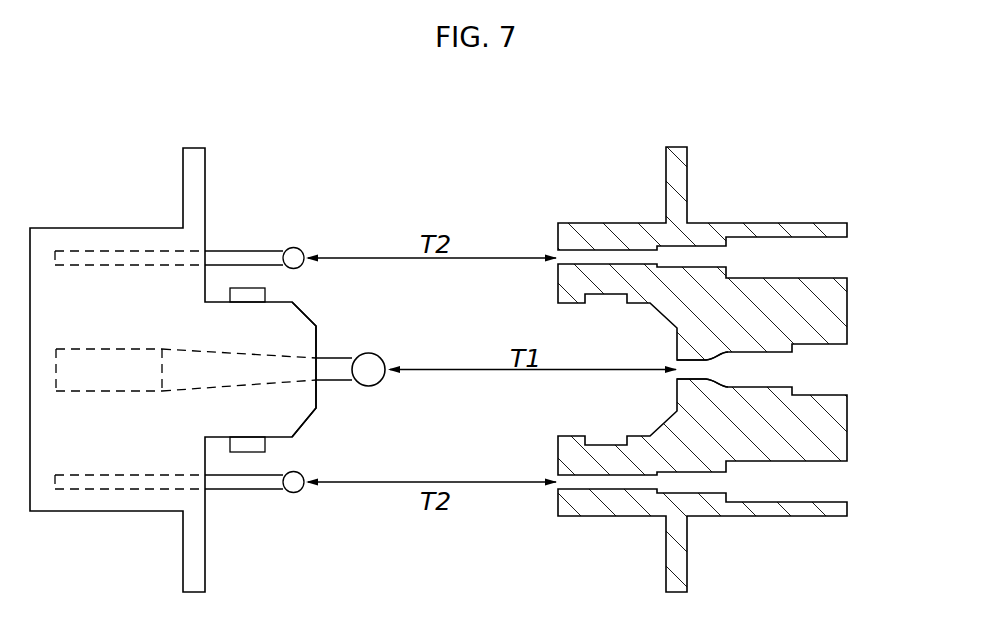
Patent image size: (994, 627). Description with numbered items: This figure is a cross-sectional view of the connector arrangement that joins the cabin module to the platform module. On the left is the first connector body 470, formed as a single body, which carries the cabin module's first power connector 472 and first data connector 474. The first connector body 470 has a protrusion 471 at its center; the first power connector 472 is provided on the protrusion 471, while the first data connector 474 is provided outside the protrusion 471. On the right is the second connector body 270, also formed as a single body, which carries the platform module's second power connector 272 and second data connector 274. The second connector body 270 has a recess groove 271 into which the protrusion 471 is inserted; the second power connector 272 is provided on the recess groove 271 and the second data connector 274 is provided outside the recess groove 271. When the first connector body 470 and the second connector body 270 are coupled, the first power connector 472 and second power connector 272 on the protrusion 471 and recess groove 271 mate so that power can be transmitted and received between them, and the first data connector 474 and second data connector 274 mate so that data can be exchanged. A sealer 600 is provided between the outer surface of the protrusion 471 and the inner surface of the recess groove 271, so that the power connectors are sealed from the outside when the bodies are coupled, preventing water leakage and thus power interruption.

The first connector body 470 is at (87, 208).
The protrusion 471 is at (272, 352).
The first power connector 472 is at (340, 372).
The first data connector 474 is at (270, 257).
The sealer 600 is at (244, 288).
The second connector body 270 is at (527, 357).
The recess groove 271 is at (592, 393).
The second power connector 272 is at (700, 370).
The second data connector 274 is at (598, 258).